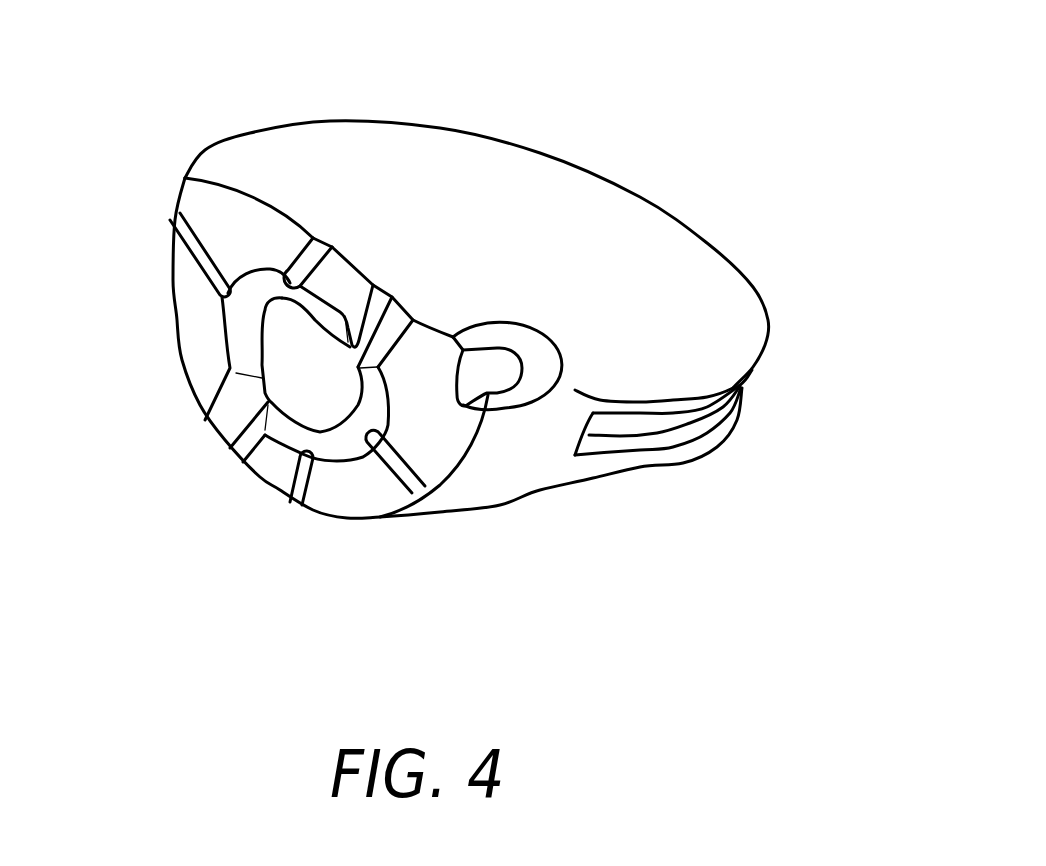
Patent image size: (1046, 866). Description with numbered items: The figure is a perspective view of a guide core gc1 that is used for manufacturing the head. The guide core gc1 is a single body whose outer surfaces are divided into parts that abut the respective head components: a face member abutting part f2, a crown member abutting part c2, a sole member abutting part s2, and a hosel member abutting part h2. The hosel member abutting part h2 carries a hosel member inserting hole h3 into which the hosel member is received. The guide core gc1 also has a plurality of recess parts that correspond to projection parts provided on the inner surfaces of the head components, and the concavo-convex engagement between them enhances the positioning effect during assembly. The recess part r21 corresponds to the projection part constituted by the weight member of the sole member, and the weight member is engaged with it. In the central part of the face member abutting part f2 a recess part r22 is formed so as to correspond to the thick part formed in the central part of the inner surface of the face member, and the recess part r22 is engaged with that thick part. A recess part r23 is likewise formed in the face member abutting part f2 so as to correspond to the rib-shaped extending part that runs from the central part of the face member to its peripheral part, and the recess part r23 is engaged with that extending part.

The guide core gc1 is at (690, 103).
The crown member abutting part c2 is at (620, 227).
The hosel member inserting hole h3 is at (490, 367).
The hosel member abutting part h2 is at (518, 402).
The face member abutting part f2 is at (345, 488).
The sole member abutting part s2 is at (547, 467).
The recess part r21 is at (633, 427).
The recess part r22 is at (288, 341).
The recess part r23 is at (305, 267).